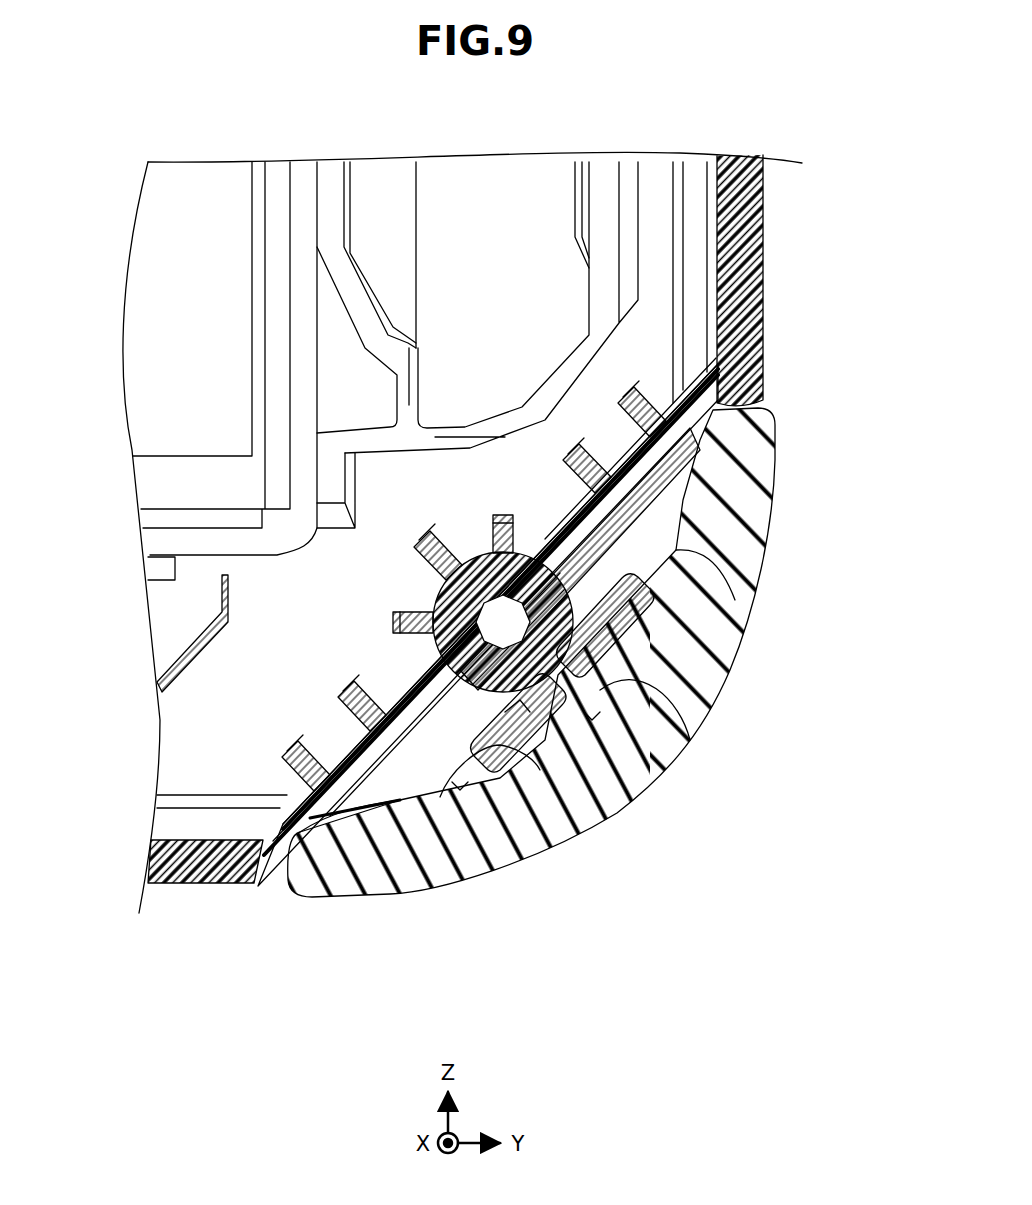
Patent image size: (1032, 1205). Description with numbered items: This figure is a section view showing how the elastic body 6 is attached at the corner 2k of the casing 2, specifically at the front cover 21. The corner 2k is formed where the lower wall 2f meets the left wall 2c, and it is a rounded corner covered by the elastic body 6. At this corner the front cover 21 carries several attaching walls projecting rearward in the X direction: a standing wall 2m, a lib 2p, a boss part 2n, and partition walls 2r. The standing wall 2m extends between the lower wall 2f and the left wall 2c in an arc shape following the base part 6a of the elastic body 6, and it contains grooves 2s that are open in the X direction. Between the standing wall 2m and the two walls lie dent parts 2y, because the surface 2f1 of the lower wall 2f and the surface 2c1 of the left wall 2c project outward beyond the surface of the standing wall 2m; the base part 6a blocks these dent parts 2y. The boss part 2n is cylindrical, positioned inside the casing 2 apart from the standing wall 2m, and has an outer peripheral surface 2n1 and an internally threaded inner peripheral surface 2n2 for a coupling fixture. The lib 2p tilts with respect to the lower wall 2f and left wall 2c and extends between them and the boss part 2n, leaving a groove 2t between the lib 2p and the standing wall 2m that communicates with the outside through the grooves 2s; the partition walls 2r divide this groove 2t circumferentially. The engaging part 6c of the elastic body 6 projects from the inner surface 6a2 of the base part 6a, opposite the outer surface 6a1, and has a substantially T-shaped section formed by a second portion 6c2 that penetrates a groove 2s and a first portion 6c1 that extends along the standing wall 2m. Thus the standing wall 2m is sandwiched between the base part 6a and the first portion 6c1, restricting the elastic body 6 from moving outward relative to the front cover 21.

The casing 2 is at (504, 575).
The front cover 21 is at (259, 890).
The left wall 2c is at (801, 280).
The surface of the left wall 2c1 is at (763, 275).
The lower wall 2f is at (205, 898).
The surface of the lower wall 2f1 is at (200, 885).
The boss part 2n is at (575, 572).
The outer peripheral surface 2n1 is at (437, 602).
The inner peripheral surface 2n2 is at (397, 625).
The lib 2p is at (565, 528).
The partition walls 2r is at (655, 598).
The standing wall 2m is at (627, 677).
The grooves 2s is at (590, 718).
The groove 2t is at (517, 722).
The dent parts 2y is at (348, 826).
The corner 2k is at (571, 664).
The elastic body 6 is at (571, 664).
The base part 6a is at (571, 652).
The outer surface 6a1 is at (705, 684).
The inner surface 6a2 is at (660, 607).
The engaging part 6c is at (595, 747).
The first portion 6c1 is at (545, 718).
The second portion 6c2 is at (610, 703).